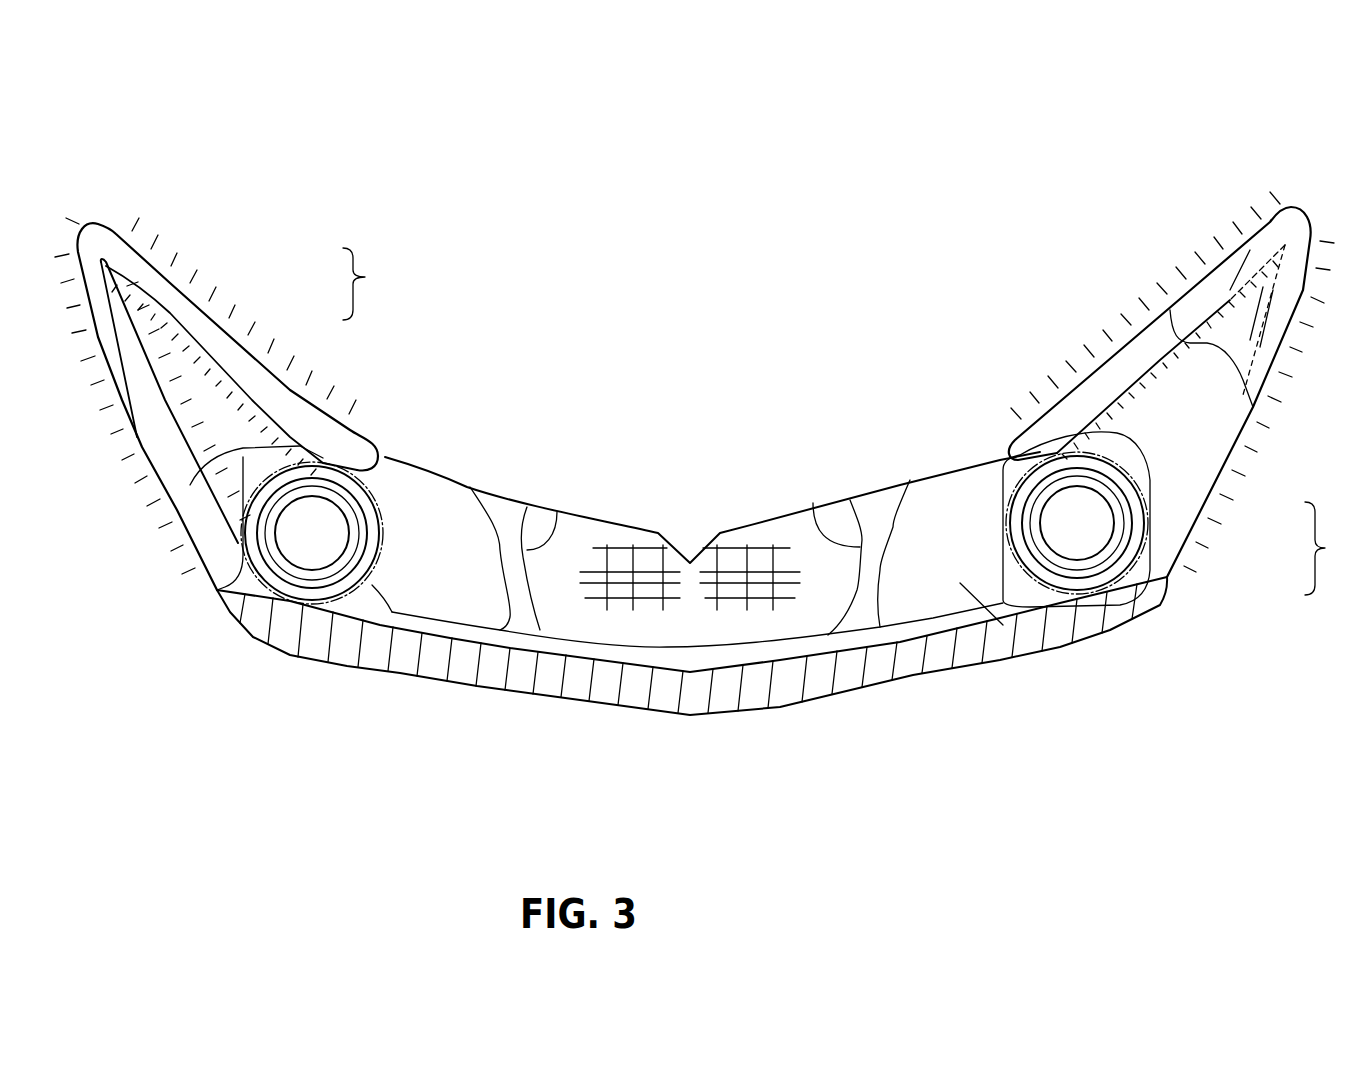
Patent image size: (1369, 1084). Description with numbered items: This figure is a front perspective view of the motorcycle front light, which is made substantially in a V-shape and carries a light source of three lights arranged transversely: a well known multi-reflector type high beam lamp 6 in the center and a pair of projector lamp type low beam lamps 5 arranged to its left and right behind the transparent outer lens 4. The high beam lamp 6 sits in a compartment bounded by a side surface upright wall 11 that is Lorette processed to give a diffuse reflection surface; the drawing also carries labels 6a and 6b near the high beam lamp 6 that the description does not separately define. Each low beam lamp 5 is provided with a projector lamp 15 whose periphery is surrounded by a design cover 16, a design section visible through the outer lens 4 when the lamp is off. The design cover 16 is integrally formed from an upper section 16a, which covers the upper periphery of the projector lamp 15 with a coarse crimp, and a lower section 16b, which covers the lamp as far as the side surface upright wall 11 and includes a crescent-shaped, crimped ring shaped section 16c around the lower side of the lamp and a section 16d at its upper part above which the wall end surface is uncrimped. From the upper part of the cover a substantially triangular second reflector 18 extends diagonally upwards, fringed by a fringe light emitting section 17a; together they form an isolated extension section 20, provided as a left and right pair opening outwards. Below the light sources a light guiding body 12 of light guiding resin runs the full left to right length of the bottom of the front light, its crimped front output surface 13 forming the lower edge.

The outer lens 4 is at (809, 747).
The low beam lamp 5 is at (302, 543).
The high beam lamp 6 is at (617, 553).
The side portion of bumper face 6a is at (160, 550).
The lower portion of bumper face 6b is at (467, 600).
The side surface upright wall 11 is at (557, 512).
The light guiding body 12 is at (692, 646).
The output surface 13 is at (607, 693).
The projector lamp 15 is at (694, 528).
The design cover 16 is at (947, 517).
The upper section 16a is at (1107, 450).
The lower section 16b is at (990, 615).
The ring shaped section 16c is at (1030, 597).
The section at upper part of lower section 16d is at (960, 480).
The fringe light emitting section 17a is at (250, 367).
The second reflector 18 is at (185, 318).
The isolated extension section 20 is at (852, 421).